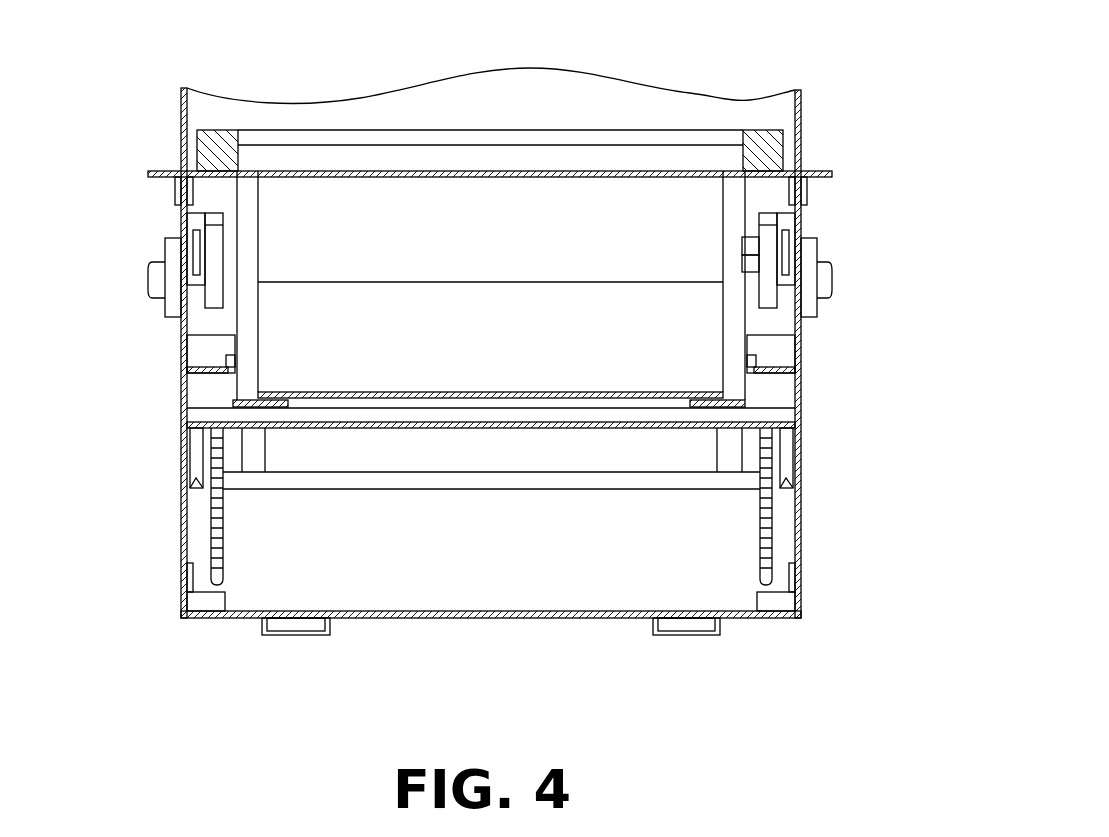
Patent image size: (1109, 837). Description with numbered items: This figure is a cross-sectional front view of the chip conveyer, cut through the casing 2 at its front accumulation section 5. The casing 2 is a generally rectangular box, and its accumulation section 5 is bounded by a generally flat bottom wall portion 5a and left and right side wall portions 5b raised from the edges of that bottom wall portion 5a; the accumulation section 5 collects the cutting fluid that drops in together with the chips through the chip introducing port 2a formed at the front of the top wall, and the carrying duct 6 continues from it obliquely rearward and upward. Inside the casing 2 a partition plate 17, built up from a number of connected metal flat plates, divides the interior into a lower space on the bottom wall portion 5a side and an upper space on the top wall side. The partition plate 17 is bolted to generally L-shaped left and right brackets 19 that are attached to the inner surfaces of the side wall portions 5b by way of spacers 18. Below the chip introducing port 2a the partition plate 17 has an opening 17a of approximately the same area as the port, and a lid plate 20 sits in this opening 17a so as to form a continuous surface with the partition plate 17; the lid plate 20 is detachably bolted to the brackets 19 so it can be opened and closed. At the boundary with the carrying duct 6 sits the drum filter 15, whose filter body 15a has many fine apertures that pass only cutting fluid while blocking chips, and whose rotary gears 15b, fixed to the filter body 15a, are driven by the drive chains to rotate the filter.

The casing 2 is at (860, 95).
The chip introducing port 2a is at (610, 147).
The accumulation section 5 is at (798, 220).
The bottom wall portion 5a is at (520, 612).
The side wall portion 5b is at (187, 506).
The carrying duct 6 is at (800, 113).
The drum filter 15 is at (427, 471).
The filter body 15a is at (340, 472).
The rotary gear 15b is at (212, 545).
The partition plate 17 is at (355, 330).
The opening 17a is at (288, 403).
The spacer 18 is at (205, 325).
The bracket 19 is at (235, 382).
The lid plate 20 is at (520, 394).